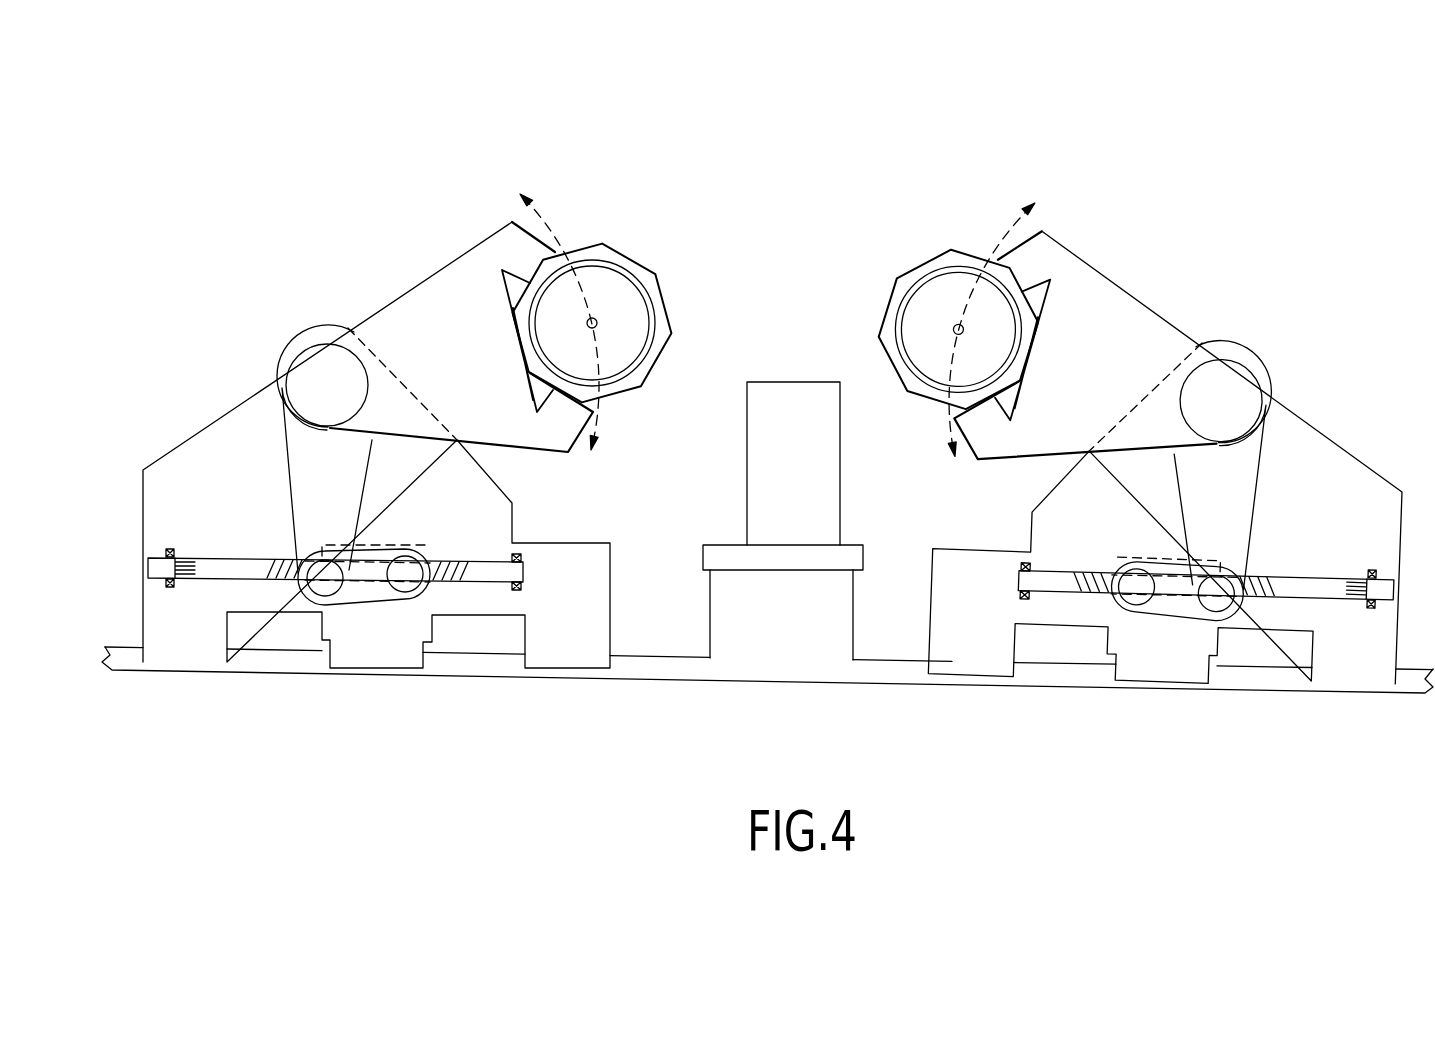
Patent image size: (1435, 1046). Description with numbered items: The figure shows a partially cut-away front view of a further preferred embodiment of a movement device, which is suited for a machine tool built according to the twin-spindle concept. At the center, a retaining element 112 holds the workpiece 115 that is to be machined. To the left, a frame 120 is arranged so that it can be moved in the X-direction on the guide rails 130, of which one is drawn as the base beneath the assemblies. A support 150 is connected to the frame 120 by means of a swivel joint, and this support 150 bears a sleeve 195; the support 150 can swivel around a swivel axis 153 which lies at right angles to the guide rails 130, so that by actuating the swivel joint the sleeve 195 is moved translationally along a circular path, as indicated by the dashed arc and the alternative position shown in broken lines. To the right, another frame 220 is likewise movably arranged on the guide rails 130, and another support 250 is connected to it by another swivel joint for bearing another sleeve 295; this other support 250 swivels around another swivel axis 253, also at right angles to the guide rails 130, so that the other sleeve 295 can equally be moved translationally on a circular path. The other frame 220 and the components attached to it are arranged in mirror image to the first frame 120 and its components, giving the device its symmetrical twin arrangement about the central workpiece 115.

The retaining element 112 is at (732, 557).
The workpiece 115 is at (790, 397).
The frame 120 is at (208, 437).
The guide rail 130 is at (893, 673).
The support 150 is at (433, 292).
The swivel axis 153 is at (327, 377).
The sleeve 195 is at (600, 320).
The other frame 220 is at (1317, 430).
The other support 250 is at (1130, 282).
The other swivel axis 253 is at (1222, 395).
The other sleeve 295 is at (948, 323).